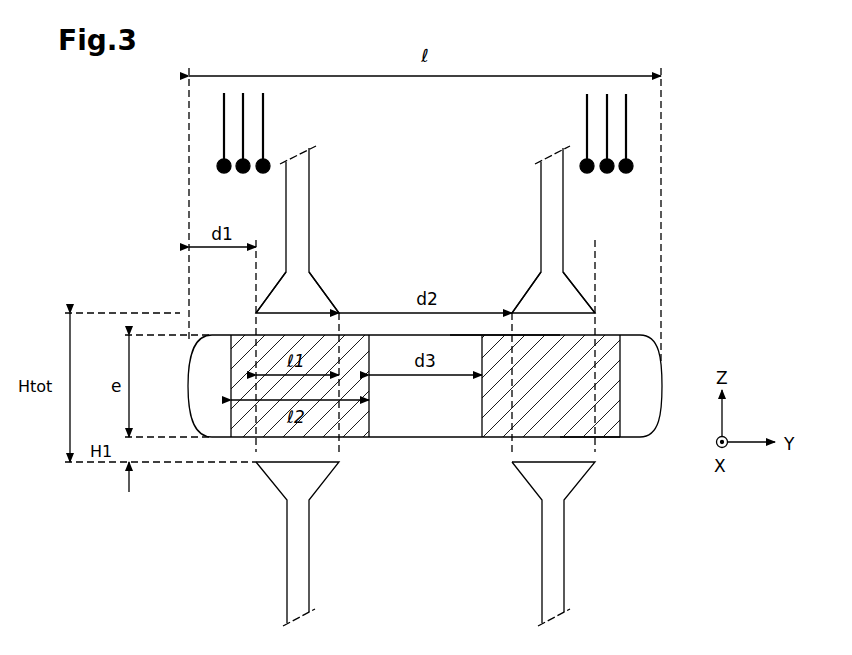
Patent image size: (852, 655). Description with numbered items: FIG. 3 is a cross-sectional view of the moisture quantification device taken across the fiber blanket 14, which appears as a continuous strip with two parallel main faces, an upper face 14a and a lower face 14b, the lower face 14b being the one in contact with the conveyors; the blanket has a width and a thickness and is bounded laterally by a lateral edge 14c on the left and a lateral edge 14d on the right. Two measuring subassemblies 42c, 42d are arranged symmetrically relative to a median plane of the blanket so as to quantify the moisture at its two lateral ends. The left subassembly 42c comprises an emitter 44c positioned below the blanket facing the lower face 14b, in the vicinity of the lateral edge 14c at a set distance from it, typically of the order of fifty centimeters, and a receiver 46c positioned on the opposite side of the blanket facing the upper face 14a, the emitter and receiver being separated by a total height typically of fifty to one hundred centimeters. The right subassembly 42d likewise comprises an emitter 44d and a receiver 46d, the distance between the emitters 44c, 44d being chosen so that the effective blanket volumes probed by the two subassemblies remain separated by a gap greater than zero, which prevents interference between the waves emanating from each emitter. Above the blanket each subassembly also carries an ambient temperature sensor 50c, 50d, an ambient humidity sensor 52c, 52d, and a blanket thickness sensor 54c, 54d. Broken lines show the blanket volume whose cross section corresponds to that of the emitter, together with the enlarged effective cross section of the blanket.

The fiber blanket 14 is at (190, 412).
The upper face 14a is at (605, 332).
The lower face 14b is at (620, 442).
The lateral edge 14c is at (188, 358).
The lateral edge 14d is at (665, 385).
The measuring subassembly 42c is at (380, 287).
The measuring subassembly 42d is at (465, 287).
The emitter 44c is at (332, 470).
The emitter 44d is at (520, 470).
The receiver 46c is at (318, 280).
The receiver 46d is at (523, 280).
The ambient temperature sensor 50c is at (222, 108).
The ambient humidity sensor 52c is at (245, 106).
The blanket thickness sensor 54c is at (265, 126).
The ambient temperature sensor 50d is at (585, 120).
The ambient humidity sensor 52d is at (607, 106).
The blanket thickness sensor 54d is at (628, 126).